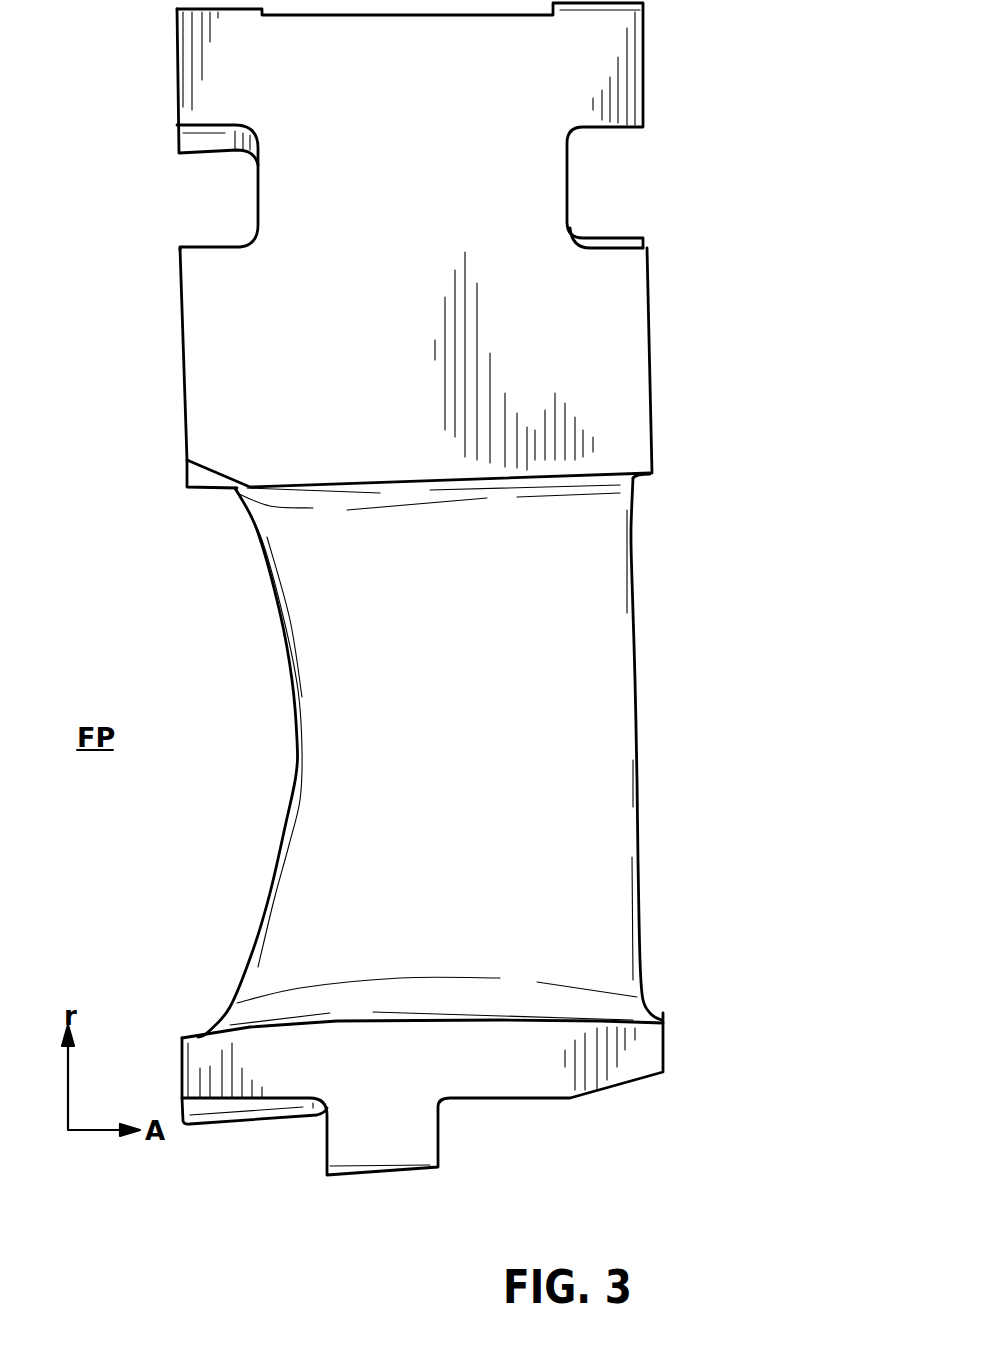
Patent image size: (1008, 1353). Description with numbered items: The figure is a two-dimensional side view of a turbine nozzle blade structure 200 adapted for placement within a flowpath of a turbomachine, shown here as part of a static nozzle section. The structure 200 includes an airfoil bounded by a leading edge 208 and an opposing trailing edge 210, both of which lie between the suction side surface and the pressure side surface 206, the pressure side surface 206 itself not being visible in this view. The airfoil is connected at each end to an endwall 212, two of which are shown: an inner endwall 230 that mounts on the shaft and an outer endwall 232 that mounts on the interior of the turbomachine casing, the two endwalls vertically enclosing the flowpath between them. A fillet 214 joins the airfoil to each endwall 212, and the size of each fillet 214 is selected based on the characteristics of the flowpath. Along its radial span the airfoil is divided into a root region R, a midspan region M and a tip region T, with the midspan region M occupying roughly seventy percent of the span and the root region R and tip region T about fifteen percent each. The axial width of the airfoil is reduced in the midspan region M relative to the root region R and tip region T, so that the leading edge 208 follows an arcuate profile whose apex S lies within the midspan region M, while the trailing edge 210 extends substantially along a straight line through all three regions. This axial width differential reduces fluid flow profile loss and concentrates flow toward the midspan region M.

The blade structure 200 is at (668, 288).
The pressure side surface 206 is at (446, 755).
The leading edge 208 is at (258, 935).
The trailing edge 210 is at (633, 693).
The endwall 212 is at (603, 457).
The fillet 214 is at (235, 488).
The inner endwall 230 is at (403, 1135).
The outer endwall 232 is at (527, 212).
The apex S is at (298, 747).
The tip region T is at (753, 490).
The midspan region M is at (753, 624).
The root region R is at (753, 877).